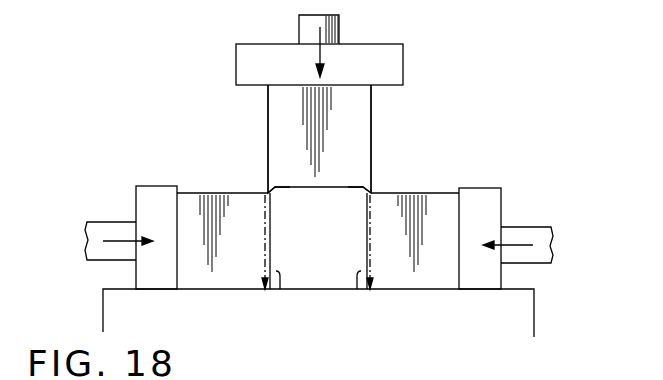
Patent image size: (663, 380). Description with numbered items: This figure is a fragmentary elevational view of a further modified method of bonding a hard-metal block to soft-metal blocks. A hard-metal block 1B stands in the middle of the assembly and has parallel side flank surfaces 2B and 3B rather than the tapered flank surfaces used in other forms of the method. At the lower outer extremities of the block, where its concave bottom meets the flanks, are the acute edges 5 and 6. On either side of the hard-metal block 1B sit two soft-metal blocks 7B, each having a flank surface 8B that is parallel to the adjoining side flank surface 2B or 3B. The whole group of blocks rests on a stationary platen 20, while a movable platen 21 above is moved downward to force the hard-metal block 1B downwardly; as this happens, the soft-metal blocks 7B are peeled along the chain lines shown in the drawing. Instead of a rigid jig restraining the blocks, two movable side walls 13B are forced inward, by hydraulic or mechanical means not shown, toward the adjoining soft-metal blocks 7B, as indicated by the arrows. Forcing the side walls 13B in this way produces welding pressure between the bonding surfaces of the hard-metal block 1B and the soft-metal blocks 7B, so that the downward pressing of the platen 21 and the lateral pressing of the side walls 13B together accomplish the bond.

The movable platen 21 is at (369, 52).
The hard-metal block 1B is at (355, 115).
The side flank surface 2B is at (372, 143).
The side flank surface 3B is at (266, 110).
The acute edge 5 is at (266, 191).
The acute edge 6 is at (373, 192).
The side wall 13B is at (158, 196).
The soft-metal block 7B is at (213, 280).
The flank surface 8B is at (280, 290).
The stationary platen 20 is at (523, 325).